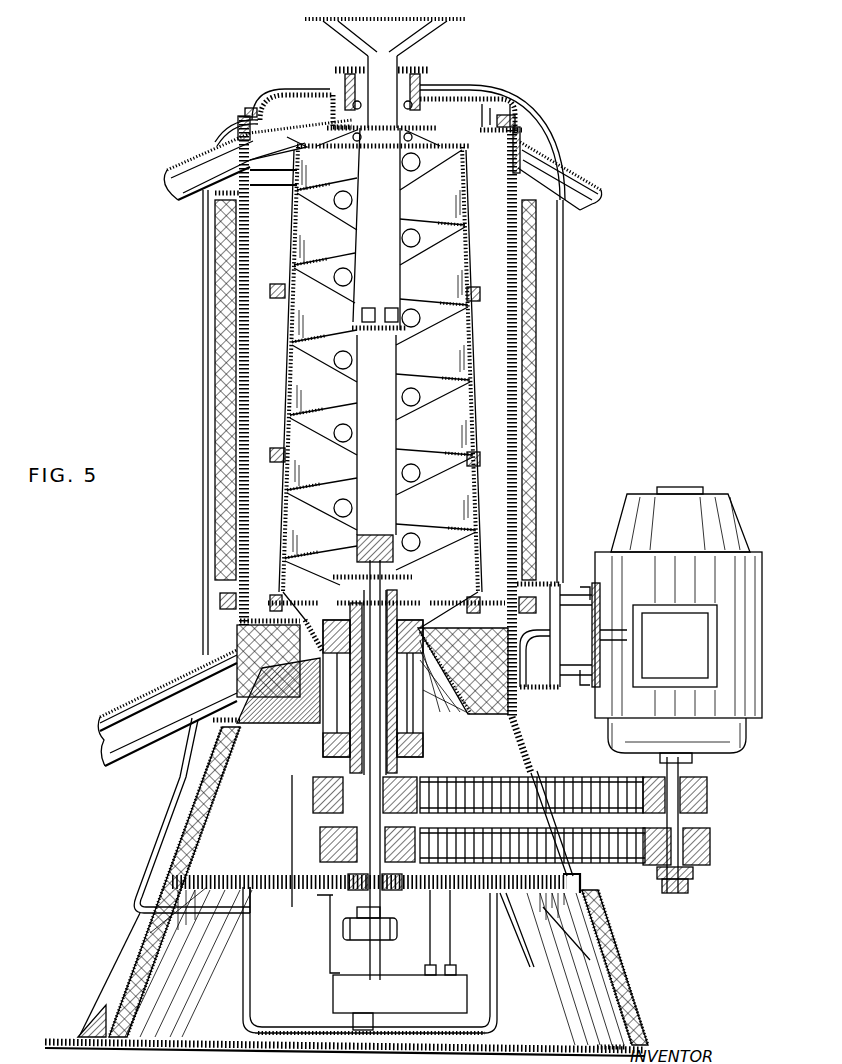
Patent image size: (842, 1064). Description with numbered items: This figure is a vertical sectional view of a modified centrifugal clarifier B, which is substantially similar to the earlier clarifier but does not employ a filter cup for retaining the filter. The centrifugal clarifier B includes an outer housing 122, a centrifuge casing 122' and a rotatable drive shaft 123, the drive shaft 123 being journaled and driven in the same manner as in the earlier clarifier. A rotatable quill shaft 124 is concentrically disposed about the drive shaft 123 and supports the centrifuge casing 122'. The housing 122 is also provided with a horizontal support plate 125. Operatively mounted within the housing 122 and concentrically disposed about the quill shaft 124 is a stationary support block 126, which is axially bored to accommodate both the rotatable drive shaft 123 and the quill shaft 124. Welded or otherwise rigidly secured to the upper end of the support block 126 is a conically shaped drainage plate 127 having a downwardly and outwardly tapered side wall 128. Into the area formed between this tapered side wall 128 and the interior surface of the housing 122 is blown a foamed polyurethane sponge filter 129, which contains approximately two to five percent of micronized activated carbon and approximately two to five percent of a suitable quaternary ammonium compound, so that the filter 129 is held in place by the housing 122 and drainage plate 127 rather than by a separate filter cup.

The outer housing 122 is at (561, 503).
The centrifuge casing 122' is at (442, 380).
The rotatable drive shaft 123 is at (370, 718).
The rotatable quill shaft 124 is at (357, 713).
The horizontal support plate 125 is at (237, 877).
The stationary support block 126 is at (322, 668).
The conically shaped drainage plate 127 is at (237, 688).
The downwardly and outwardly tapered side wall 128 is at (233, 645).
The foamed polyurethane sponge filter 129 is at (237, 632).
The centrifugal clarifier B is at (597, 172).